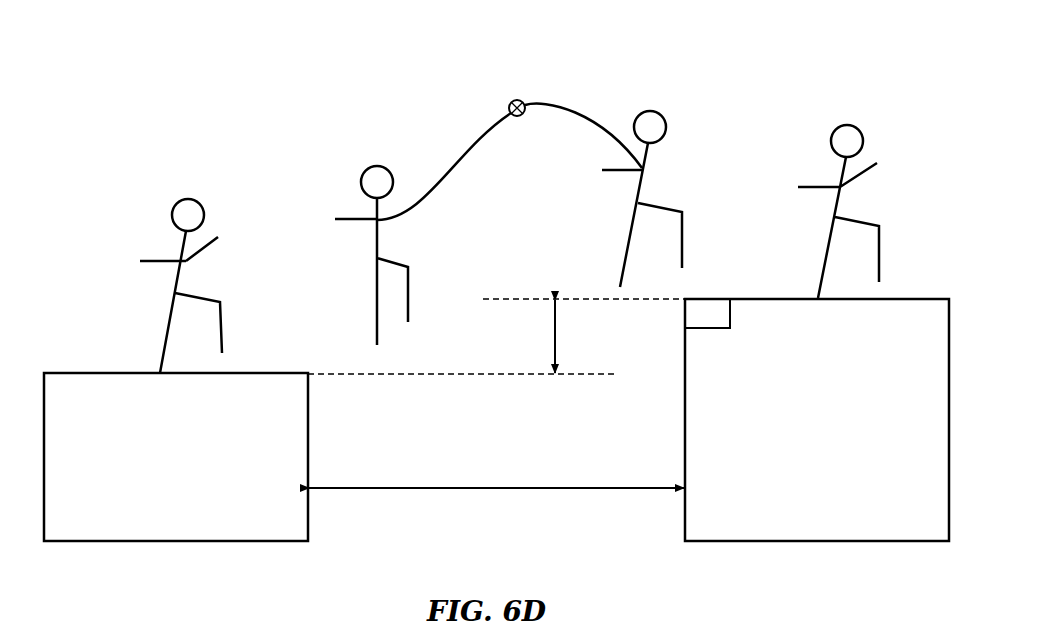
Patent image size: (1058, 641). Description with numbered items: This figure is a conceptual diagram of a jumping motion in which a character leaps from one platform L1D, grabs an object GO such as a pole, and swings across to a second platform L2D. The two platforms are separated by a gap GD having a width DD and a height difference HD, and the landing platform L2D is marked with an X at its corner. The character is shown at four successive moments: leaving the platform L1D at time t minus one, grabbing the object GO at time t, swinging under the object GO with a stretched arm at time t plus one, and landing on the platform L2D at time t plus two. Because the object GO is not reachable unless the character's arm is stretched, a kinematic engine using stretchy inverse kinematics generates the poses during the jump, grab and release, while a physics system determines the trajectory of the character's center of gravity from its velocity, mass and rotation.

The platform L1D is at (176, 457).
The platform L2D is at (817, 420).
The landing zone marker X is at (707, 313).
The object GO is at (518, 100).
The height difference HD is at (552, 331).
The gap GD is at (476, 422).
The width DD is at (473, 488).